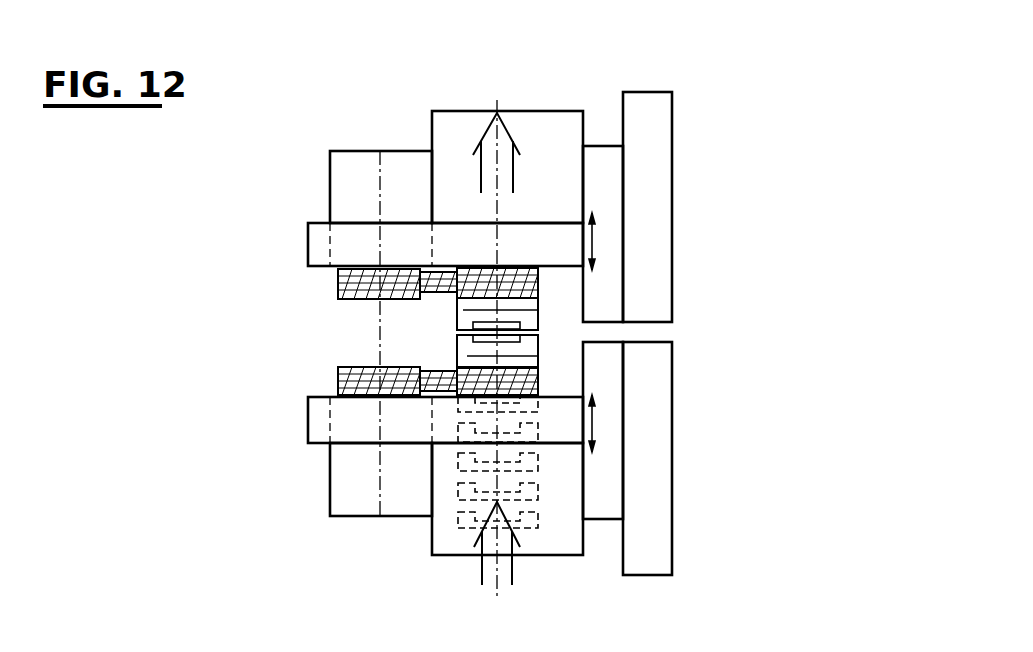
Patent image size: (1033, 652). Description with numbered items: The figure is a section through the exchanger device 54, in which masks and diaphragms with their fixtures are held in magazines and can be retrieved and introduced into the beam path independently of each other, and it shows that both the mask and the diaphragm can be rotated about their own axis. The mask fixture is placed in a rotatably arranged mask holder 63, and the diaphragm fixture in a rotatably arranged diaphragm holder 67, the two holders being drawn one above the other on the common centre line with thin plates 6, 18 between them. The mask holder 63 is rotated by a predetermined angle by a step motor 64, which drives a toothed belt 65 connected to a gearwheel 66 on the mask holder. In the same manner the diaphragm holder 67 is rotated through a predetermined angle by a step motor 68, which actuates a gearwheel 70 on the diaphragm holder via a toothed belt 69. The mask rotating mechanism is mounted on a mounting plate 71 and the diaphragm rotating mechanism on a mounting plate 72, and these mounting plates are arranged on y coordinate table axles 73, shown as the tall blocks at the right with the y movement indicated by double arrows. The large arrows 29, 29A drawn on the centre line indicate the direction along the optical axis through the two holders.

The exchanger device 54 is at (740, 105).
The step motor 68 is at (345, 185).
The mounting plate 72 is at (540, 238).
The y coordinate table axle 73 is at (652, 238).
The upward force arrow 29A is at (500, 158).
The toothed belt 69 is at (345, 286).
The gearwheel 70 is at (527, 293).
The diaphragm holder 67 is at (463, 308).
The upper thin plate 6 is at (513, 325).
The lower thin plate 18 is at (517, 338).
The mask holder 63 is at (468, 357).
The toothed belt 65 is at (345, 383).
The gearwheel 66 is at (537, 388).
The mounting plate 71 is at (555, 423).
The step motor 64 is at (352, 482).
The upward force arrow 29 is at (493, 558).